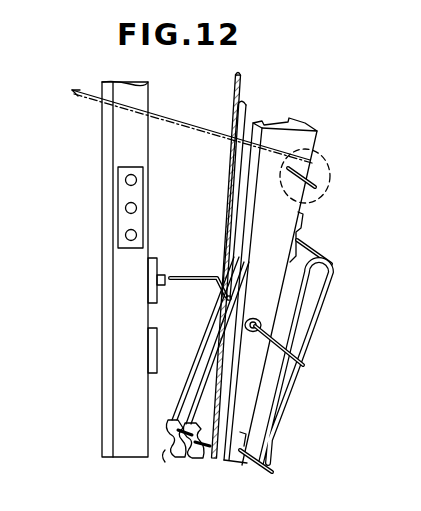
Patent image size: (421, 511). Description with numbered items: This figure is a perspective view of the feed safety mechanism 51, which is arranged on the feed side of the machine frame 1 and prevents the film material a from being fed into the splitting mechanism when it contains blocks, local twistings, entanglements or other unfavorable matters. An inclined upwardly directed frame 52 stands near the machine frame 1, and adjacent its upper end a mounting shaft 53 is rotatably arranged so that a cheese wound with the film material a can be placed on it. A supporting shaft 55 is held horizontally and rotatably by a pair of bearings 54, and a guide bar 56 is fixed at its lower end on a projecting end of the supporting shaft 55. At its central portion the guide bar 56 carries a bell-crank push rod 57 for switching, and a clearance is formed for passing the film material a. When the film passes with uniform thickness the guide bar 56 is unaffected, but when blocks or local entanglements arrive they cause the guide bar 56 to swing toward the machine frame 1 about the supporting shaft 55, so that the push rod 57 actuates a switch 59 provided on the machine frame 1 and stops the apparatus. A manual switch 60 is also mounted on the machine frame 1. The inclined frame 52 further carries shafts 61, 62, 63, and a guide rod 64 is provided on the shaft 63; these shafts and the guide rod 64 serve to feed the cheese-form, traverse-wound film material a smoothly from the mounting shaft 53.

The machine frame 1 is at (126, 330).
The film material a is at (182, 122).
The feed safety mechanism 51 is at (330, 108).
The inclined frame 52 is at (310, 141).
The mounting shaft 53 is at (322, 184).
The bearing 54 is at (168, 440).
The supporting shaft 55 is at (186, 418).
The guide bar 56 is at (243, 84).
The bell-crank push rod 57 is at (195, 276).
The switch 59 is at (157, 258).
The manual switch 60 is at (118, 178).
The shaft 61 is at (306, 346).
The shaft 62 is at (315, 250).
The shaft 63 is at (256, 470).
The guide rod 64 is at (288, 406).